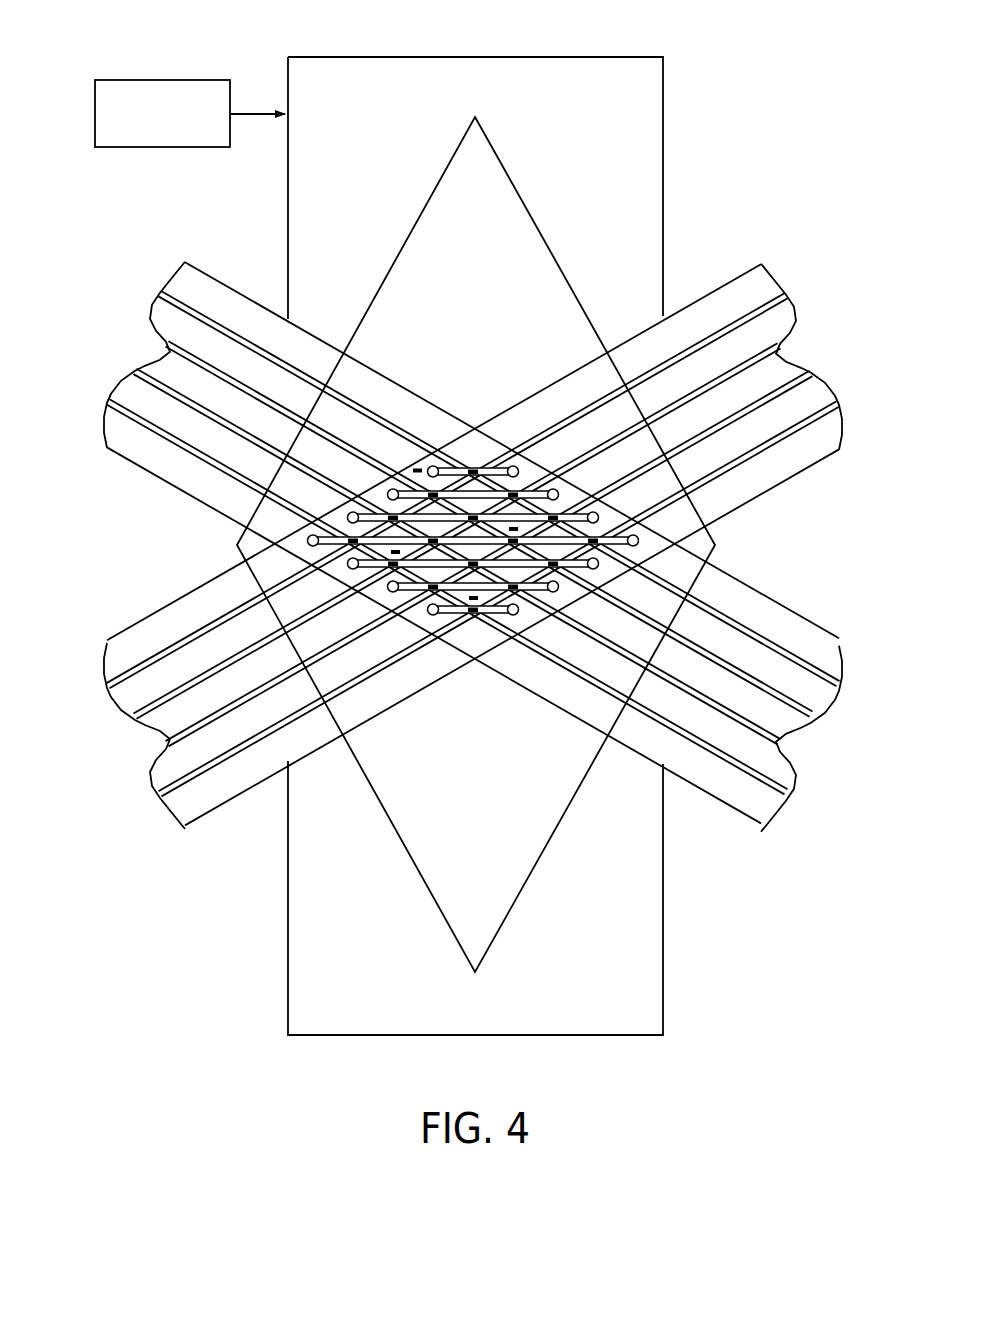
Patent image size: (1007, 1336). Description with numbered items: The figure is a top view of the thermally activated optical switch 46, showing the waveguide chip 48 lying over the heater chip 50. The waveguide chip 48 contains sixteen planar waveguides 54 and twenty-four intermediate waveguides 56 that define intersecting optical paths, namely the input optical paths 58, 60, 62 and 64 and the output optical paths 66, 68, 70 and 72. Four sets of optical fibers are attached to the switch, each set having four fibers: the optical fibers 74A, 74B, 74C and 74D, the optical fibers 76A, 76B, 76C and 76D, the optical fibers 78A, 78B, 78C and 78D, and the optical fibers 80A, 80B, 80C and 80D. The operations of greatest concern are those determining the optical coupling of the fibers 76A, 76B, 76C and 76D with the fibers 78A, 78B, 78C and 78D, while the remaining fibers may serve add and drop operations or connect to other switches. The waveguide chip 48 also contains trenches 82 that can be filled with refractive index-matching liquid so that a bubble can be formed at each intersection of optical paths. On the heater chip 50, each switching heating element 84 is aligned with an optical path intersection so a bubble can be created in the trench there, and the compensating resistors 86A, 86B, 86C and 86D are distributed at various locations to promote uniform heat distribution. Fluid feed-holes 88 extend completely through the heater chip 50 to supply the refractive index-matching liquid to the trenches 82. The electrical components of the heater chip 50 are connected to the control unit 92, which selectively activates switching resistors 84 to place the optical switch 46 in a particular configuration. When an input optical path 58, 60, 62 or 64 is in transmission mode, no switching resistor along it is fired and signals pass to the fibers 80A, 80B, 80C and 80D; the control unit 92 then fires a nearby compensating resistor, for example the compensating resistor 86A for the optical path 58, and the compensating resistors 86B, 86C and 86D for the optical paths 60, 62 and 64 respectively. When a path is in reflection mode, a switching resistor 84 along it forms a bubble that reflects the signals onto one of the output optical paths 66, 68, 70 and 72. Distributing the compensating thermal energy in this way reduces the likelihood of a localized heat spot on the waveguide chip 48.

The thermally activated optical switch 46 is at (795, 122).
The waveguide chip 48 is at (553, 252).
The heater chip 50 is at (577, 58).
The planar waveguides 54 is at (500, 553).
The intermediate waveguides 56 is at (540, 517).
The input optical path 58 is at (100, 690).
The input optical path 60 is at (120, 725).
The input optical path 62 is at (143, 760).
The input optical path 64 is at (153, 800).
The output optical path 66 is at (798, 802).
The output optical path 68 is at (810, 762).
The output optical path 70 is at (830, 728).
The output optical path 72 is at (848, 695).
The optical fiber 74A is at (178, 285).
The optical fiber 74B is at (152, 332).
The optical fiber 74C is at (148, 366).
The optical fiber 74D is at (120, 388).
The optical fiber 76A is at (167, 645).
The optical fiber 76B is at (245, 645).
The optical fiber 76C is at (217, 717).
The optical fiber 76D is at (187, 782).
The optical fiber 78A is at (715, 617).
The optical fiber 78B is at (747, 678).
The optical fiber 78C is at (727, 718).
The optical fiber 78D is at (757, 783).
The optical fiber 80A is at (766, 283).
The optical fiber 80B is at (783, 320).
The optical fiber 80C is at (790, 365).
The optical fiber 80D is at (818, 398).
The trenches 82 is at (587, 570).
The switching heating element 84 is at (471, 467).
The compensating resistor 86A is at (417, 467).
The compensating resistor 86B is at (360, 548).
The compensating resistor 86C is at (595, 520).
The compensating resistor 86D is at (438, 600).
The fluid feed-holes 88 is at (605, 580).
The control unit 92 is at (178, 80).